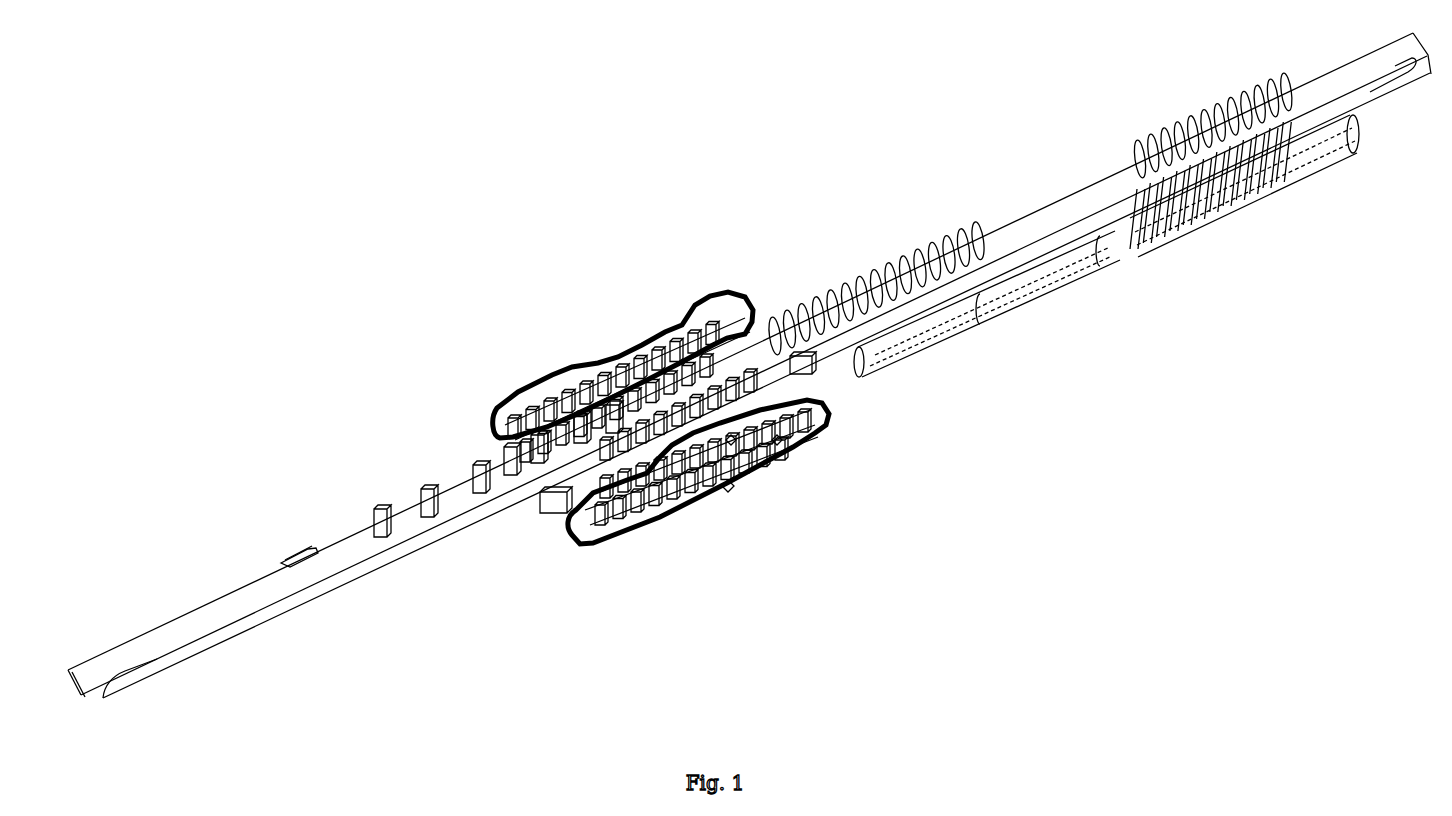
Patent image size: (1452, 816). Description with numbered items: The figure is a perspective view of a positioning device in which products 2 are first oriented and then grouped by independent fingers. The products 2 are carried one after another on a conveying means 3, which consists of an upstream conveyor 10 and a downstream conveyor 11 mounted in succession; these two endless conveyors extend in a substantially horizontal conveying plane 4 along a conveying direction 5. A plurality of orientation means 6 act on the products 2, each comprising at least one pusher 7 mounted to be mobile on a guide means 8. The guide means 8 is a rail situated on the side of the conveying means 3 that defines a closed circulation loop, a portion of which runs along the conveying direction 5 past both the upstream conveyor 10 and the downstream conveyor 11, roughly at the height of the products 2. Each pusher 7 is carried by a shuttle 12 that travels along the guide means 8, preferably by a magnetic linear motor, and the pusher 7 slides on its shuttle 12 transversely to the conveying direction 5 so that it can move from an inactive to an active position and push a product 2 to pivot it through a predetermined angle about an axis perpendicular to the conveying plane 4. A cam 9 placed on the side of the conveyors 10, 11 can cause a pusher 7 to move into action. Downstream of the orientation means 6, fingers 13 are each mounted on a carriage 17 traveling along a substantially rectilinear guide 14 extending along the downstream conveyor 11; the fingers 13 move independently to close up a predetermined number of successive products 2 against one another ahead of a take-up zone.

The product 2 is at (378, 500).
The conveying means 3 is at (387, 590).
The conveying plane 4 is at (1083, 135).
The conveying direction 5 is at (292, 535).
The orientation means 6 is at (505, 382).
The pusher 7 is at (507, 430).
The guide means 8 is at (760, 310).
The cam 9 is at (615, 355).
The upstream conveyor 10 is at (447, 530).
The downstream conveyor 11 is at (843, 340).
The shuttle 12 is at (731, 440).
The finger 13 is at (1193, 158).
The guide 14 is at (1055, 277).
The carriage 17 is at (1293, 170).